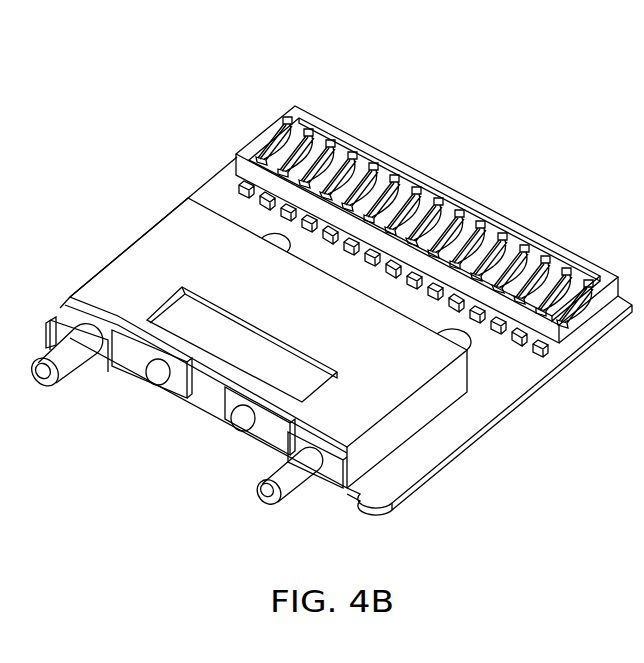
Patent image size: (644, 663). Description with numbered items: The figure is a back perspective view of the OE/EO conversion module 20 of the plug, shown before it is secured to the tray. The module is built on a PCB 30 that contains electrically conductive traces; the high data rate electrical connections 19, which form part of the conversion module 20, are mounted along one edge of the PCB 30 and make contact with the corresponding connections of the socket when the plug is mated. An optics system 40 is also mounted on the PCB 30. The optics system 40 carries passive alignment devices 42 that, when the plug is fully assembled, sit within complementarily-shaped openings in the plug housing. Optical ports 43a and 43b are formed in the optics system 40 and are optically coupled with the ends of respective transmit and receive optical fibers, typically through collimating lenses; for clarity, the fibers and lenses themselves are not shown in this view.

The high data rate electrical connections 19 is at (333, 137).
The OE/EO conversion module 20 is at (390, 92).
The PCB 30 is at (527, 395).
The optics system 40 is at (157, 252).
The passive alignment devices 42 is at (44, 376).
The optical port 43a is at (158, 374).
The optical port 43b is at (243, 420).